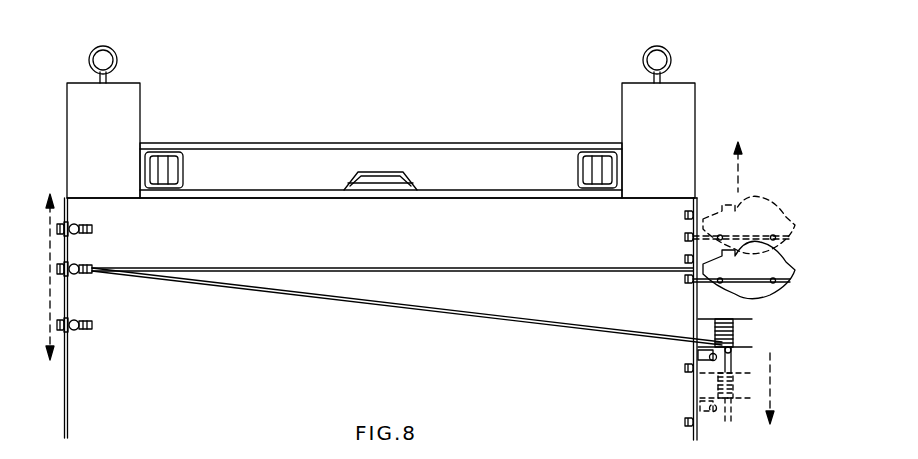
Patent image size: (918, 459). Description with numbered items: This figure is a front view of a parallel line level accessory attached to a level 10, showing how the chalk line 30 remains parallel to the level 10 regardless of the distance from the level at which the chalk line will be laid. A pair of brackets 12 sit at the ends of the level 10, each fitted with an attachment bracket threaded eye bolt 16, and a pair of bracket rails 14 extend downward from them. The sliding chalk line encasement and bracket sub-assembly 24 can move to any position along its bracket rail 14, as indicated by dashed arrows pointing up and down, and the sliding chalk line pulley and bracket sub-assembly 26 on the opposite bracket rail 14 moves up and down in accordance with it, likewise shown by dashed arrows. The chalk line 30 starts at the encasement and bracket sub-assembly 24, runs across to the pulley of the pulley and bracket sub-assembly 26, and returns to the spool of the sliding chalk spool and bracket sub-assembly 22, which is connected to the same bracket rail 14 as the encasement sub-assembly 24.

The level 10 is at (403, 142).
The bracket 12 is at (136, 110).
The bracket rail 14 is at (68, 418).
The attachment bracket threaded eye bolt 16 is at (113, 63).
The sliding chalk spool and bracket sub-assembly 22 is at (692, 323).
The sliding chalk line encasement and bracket sub-assembly 24 is at (760, 196).
The sliding chalk line pulley and bracket sub-assembly 26 is at (96, 225).
The chalk line 30 is at (447, 268).